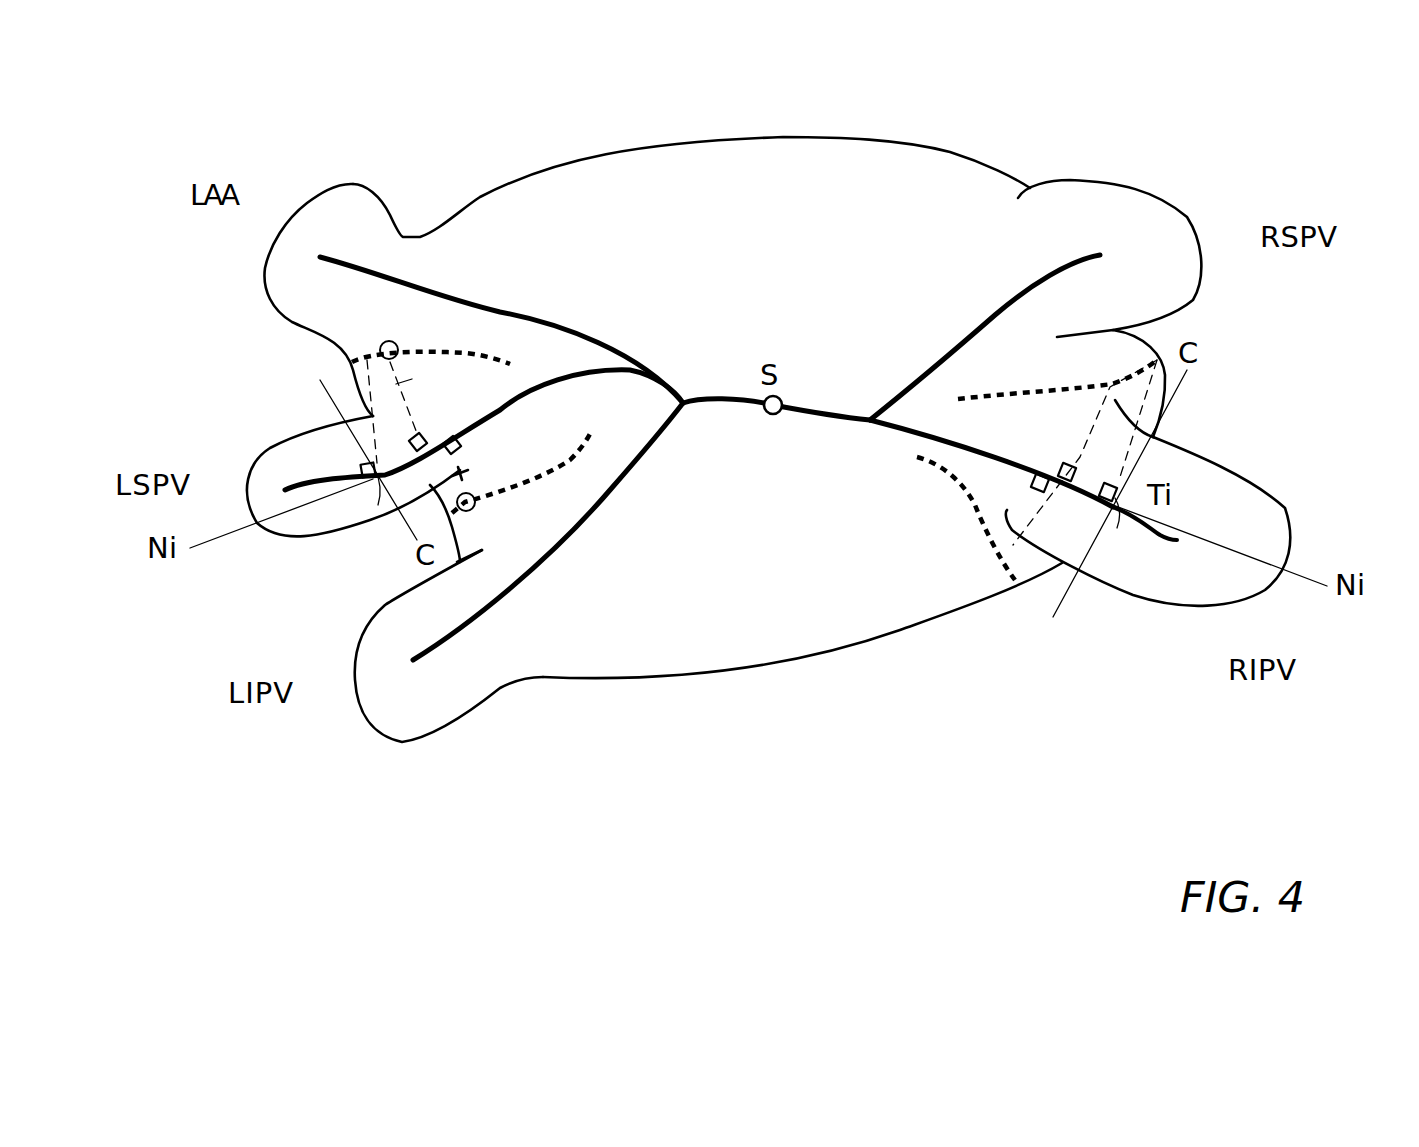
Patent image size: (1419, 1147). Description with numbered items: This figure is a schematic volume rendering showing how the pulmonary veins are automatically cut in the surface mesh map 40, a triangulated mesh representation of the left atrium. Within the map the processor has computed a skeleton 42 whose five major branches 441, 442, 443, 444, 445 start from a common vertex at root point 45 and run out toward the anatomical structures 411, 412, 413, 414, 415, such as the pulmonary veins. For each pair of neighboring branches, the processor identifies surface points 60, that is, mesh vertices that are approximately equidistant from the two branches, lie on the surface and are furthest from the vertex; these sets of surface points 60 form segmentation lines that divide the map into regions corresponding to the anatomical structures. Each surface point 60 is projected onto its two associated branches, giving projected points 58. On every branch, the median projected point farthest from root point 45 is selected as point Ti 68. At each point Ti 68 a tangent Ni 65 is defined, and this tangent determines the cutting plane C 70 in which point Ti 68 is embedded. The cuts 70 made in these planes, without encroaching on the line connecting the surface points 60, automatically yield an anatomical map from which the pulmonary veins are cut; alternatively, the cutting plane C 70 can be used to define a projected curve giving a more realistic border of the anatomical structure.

The surface mesh map 40 is at (781, 477).
The skeleton 42 is at (833, 372).
The root point 45 is at (772, 416).
The projected point 58 is at (375, 433).
The surface points 60 is at (450, 350).
The tangent Ni 65 is at (195, 552).
The point Ti 68 is at (373, 476).
The cutting plane C 70 is at (321, 383).
The right superior pulmonary vein 411 is at (1195, 298).
The right inferior pulmonary vein 412 is at (1287, 550).
The left atrial appendage 413 is at (265, 268).
The left superior pulmonary vein 414 is at (250, 457).
The left inferior pulmonary vein 415 is at (367, 732).
The skeleton major branch 441 is at (990, 317).
The skeleton major branch 442 is at (1168, 543).
The skeleton major branch 443 is at (560, 320).
The skeleton major branch 444 is at (333, 480).
The skeleton major branch 445 is at (583, 516).